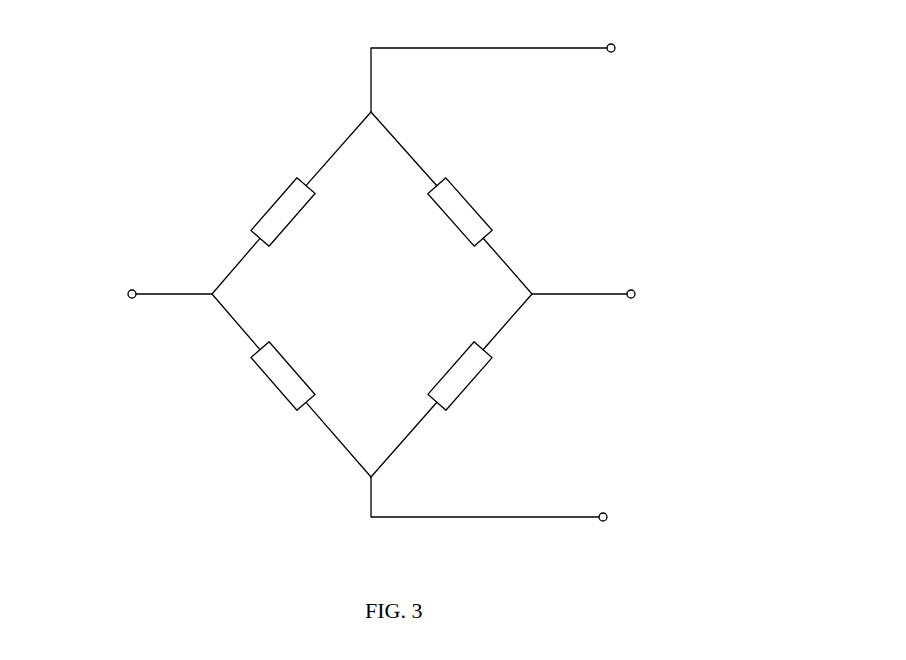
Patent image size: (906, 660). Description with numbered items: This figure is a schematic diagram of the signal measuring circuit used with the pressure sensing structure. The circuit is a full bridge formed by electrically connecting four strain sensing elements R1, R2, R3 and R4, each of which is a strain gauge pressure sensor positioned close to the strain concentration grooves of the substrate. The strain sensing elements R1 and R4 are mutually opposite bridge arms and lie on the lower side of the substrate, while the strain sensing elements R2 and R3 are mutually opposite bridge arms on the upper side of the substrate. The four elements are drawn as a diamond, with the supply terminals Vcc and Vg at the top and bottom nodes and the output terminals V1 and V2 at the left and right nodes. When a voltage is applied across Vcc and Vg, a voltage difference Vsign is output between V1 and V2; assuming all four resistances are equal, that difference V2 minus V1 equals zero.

The strain sensing element R1 is at (291, 203).
The strain sensing element R2 is at (291, 385).
The strain sensing element R3 is at (451, 203).
The strain sensing element R4 is at (451, 385).
The output terminal V1 is at (124, 286).
The output terminal V2 is at (613, 280).
The supply voltage terminal Vcc is at (560, 68).
The ground voltage terminal Vg is at (539, 509).